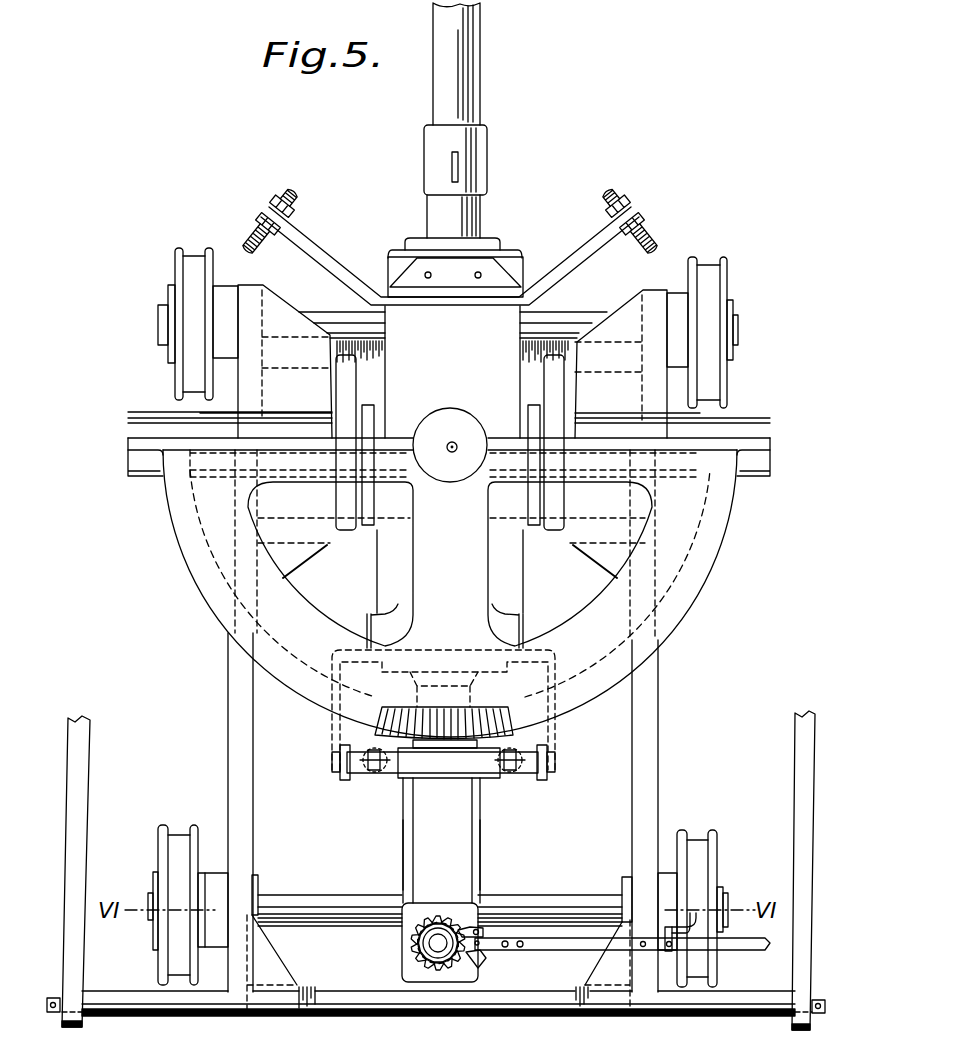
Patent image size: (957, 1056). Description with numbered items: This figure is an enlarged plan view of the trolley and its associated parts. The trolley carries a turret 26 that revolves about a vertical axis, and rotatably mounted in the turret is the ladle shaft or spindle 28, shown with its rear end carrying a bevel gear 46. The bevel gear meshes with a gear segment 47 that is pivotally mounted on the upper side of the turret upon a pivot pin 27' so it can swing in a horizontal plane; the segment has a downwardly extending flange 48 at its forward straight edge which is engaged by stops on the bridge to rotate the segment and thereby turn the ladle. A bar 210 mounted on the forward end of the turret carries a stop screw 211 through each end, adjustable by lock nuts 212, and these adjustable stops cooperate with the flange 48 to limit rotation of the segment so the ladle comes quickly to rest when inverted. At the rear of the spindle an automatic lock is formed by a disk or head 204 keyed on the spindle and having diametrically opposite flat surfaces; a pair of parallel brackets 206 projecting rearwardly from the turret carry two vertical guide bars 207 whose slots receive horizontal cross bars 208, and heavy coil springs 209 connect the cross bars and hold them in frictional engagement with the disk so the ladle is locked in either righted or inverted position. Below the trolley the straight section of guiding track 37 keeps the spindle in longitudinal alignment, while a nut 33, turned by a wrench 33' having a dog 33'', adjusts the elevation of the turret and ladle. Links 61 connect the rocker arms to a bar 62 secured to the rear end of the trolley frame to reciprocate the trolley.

The shaft or spindle 28 is at (458, 102).
The stop screw 211 is at (616, 196).
The lock nuts 212 is at (644, 212).
The bar 210 is at (586, 262).
The turret 26 is at (452, 372).
The pivot pin 27' is at (450, 445).
The flange 48 is at (782, 450).
The gear segment 47 is at (296, 686).
The brackets 206 is at (568, 738).
The bevel gear 46 is at (428, 730).
The cross bars 208 is at (442, 763).
The guide bars 207 is at (552, 790).
The coil springs 209 is at (498, 788).
The disk or head 204 is at (458, 778).
The straight section of guiding track 37 is at (480, 828).
The nut 33 is at (440, 923).
The dog 33'' is at (494, 956).
The wrench 33' is at (622, 948).
The links 61 is at (785, 770).
The bar 62 is at (190, 1012).